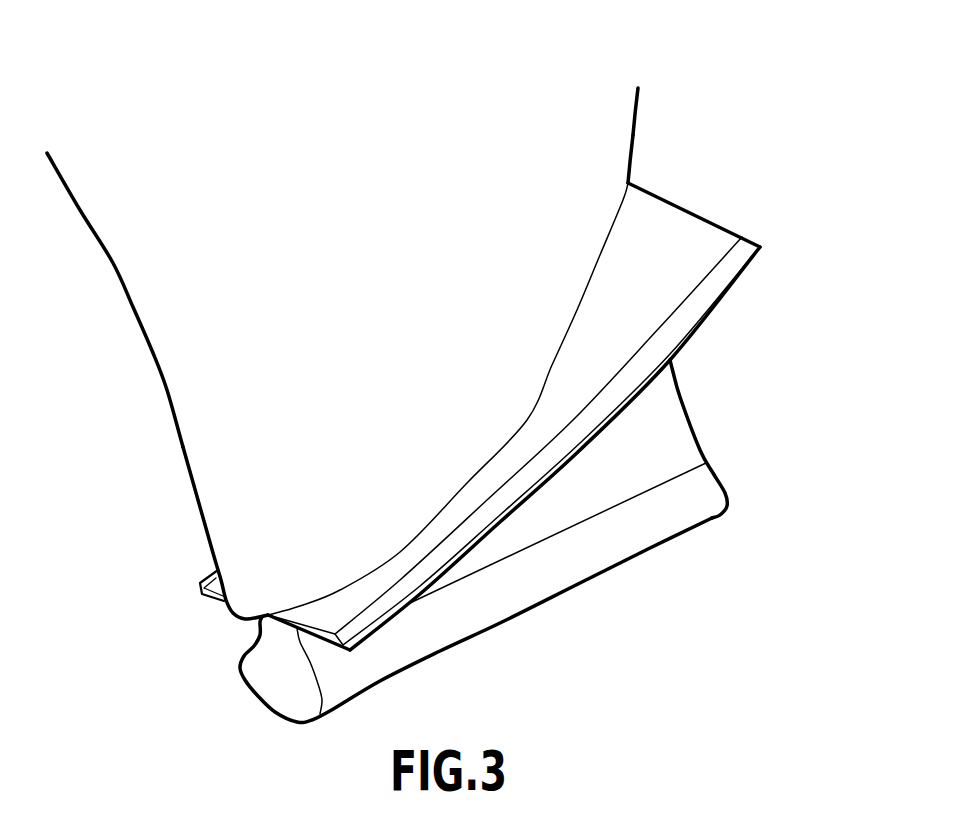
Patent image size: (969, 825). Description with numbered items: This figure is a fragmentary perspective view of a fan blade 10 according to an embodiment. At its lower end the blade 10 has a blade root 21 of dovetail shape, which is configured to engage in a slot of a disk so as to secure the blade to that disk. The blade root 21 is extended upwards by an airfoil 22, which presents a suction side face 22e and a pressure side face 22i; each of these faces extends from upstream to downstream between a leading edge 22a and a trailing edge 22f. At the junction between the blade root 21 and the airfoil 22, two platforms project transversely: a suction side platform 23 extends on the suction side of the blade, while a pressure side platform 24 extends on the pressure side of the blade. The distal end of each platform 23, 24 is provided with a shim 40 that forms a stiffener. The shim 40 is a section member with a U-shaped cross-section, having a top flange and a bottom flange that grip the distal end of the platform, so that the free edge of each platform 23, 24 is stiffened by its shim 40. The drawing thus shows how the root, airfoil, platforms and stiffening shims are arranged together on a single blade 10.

The blade 10 is at (797, 82).
The blade root 21 is at (272, 688).
The airfoil 22 is at (176, 333).
The leading edge 22a is at (180, 449).
The suction side face 22e is at (613, 135).
The trailing edge 22f is at (642, 92).
The pressure side face 22i is at (152, 272).
The suction side platform 23 is at (677, 232).
The pressure side platform 24 is at (210, 603).
The shim 40 is at (203, 569).